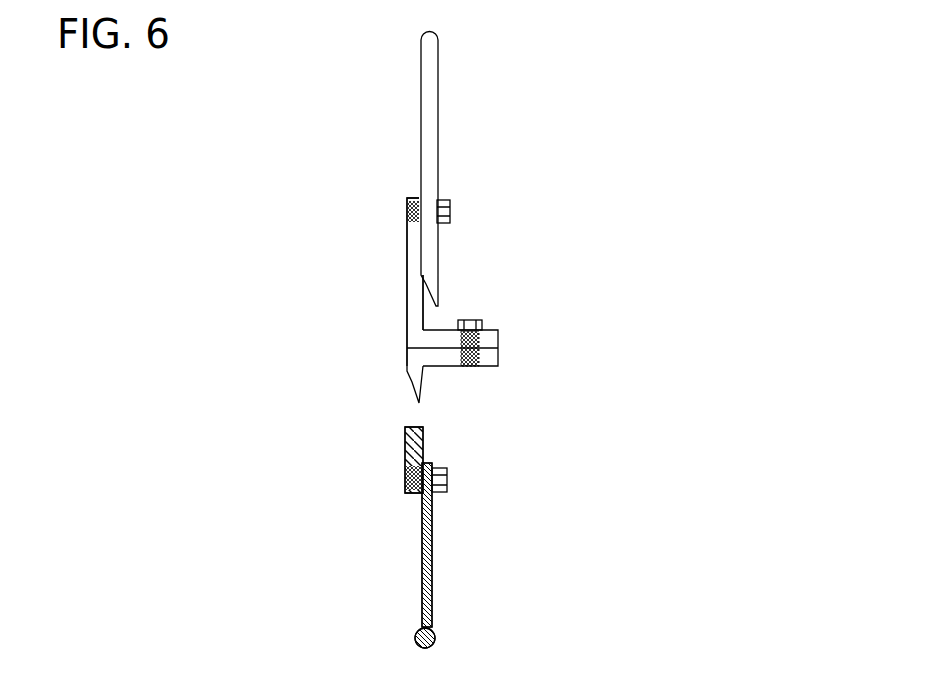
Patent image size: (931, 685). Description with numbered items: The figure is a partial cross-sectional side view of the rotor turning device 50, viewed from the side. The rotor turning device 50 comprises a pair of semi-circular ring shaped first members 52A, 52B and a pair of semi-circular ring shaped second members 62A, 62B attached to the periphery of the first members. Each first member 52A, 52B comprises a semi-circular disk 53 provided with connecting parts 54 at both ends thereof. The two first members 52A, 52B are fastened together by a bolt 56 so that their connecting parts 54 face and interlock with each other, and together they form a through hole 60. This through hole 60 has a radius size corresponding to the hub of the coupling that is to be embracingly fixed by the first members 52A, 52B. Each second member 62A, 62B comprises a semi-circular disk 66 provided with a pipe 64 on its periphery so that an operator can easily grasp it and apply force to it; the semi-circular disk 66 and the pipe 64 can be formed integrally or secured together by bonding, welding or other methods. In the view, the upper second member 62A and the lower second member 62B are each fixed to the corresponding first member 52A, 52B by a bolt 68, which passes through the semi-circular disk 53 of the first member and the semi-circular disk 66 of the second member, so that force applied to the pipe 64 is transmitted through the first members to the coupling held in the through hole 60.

The rotor turning device 50 is at (642, 104).
The first member 52A is at (386, 257).
The first member 52B is at (388, 500).
The semi-circular disk 53 is at (406, 290).
The connecting parts 54 is at (498, 337).
The bolt 56 is at (469, 319).
The through hole 60 is at (414, 404).
The second member 62A is at (450, 90).
The second member 62B is at (520, 576).
The pipe 64 is at (420, 128).
The semi-circular disk 66 is at (433, 592).
The bolt 68 is at (450, 212).